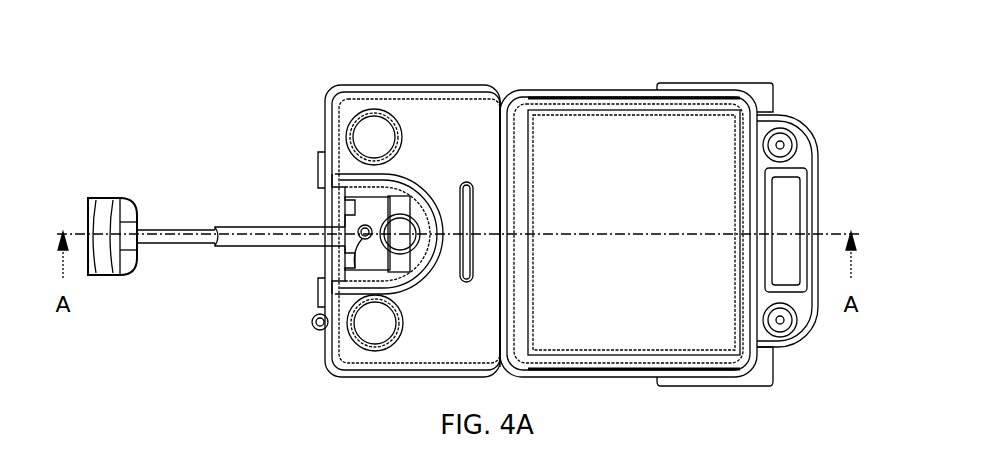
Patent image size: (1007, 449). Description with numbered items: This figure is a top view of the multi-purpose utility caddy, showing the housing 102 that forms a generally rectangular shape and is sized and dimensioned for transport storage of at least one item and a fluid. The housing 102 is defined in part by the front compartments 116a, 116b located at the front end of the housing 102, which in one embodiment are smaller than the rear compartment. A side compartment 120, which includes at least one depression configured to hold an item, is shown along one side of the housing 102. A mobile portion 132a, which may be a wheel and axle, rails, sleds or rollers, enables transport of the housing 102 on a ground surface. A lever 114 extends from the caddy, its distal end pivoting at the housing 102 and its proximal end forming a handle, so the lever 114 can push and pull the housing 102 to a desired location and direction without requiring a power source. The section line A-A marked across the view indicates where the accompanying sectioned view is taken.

The housing 102 is at (507, 78).
The lever 114 is at (220, 225).
The front compartment 116a is at (402, 230).
The front compartment 116b is at (634, 233).
The side compartment 120 is at (812, 140).
The mobile portion 132a is at (753, 78).